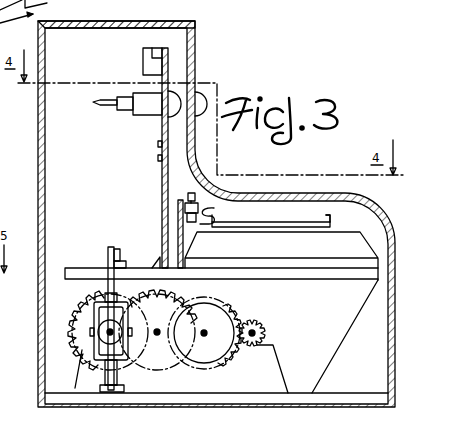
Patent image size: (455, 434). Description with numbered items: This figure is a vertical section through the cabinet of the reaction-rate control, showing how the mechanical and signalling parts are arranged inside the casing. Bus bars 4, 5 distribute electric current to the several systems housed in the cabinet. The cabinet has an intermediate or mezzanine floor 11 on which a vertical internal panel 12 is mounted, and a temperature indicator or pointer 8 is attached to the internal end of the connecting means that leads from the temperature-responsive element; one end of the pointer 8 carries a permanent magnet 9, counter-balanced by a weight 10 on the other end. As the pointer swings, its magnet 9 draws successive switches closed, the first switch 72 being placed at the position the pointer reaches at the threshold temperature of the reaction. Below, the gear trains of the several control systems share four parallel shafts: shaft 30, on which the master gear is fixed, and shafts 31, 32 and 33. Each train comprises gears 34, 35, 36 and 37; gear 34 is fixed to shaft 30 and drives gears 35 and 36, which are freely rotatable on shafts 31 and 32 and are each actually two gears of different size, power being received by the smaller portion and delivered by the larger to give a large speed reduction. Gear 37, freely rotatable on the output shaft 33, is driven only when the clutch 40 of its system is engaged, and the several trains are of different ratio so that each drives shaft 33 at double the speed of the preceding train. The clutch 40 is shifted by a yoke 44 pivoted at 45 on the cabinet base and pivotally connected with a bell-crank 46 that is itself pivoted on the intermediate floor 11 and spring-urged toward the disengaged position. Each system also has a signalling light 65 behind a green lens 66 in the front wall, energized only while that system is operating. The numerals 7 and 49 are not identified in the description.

The bus bar 4 is at (158, 143).
The bus bar 5 is at (158, 158).
The housing 7 is at (161, 22).
The indicator 8 is at (270, 222).
The permanent magnet 9 is at (215, 214).
The weight 10 is at (328, 222).
The intermediate or mezzanine floor 11 is at (77, 268).
The vertical internal panel 12 is at (160, 201).
The shaft 30 is at (258, 333).
The shaft 31 is at (205, 336).
The shaft 32 is at (157, 336).
The output shaft 33 is at (107, 331).
The gear 34 is at (256, 323).
The gear 35 is at (224, 320).
The gear 36 is at (175, 303).
The gear 37 is at (78, 318).
The clutch 40 is at (75, 346).
The yoke 44 is at (94, 303).
The pivot 45 is at (118, 388).
The bell-crank 46 is at (107, 252).
The support brace 49 is at (267, 380).
The light 65 is at (152, 108).
The green lens 66 is at (204, 104).
The first switch 72 is at (192, 193).